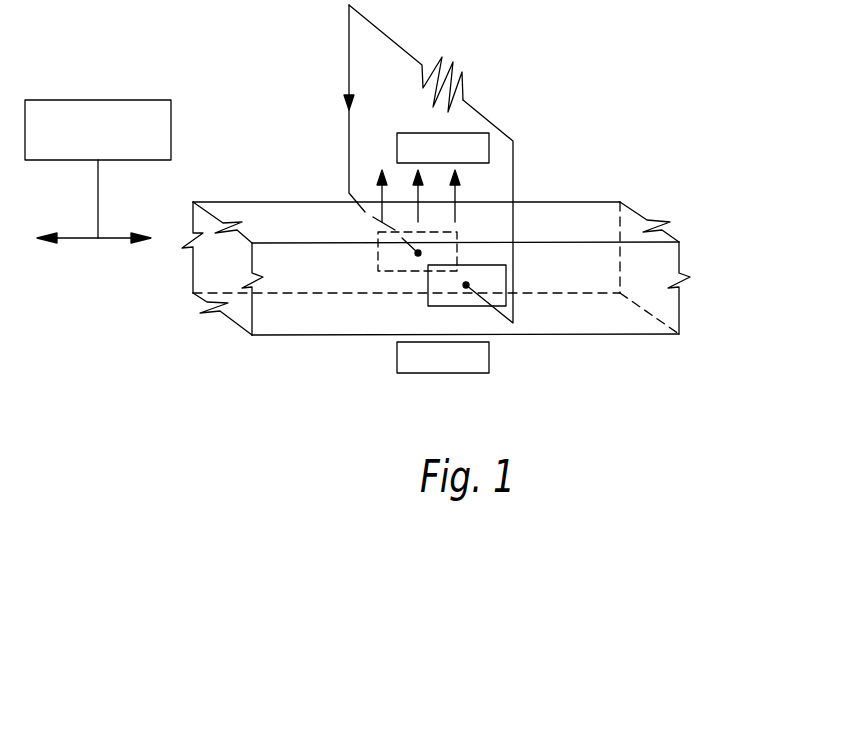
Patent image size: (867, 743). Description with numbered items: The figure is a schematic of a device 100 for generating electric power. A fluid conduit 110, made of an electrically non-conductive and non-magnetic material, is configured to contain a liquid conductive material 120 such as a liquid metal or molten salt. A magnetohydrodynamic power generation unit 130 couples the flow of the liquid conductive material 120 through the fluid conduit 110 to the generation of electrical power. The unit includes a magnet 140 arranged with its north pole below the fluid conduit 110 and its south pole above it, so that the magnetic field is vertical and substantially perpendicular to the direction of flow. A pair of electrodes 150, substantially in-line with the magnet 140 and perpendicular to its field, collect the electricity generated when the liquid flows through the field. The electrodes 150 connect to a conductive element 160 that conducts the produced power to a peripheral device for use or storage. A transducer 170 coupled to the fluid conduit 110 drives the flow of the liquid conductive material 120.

The device 100 is at (242, 45).
The fluid conduit 110 is at (602, 212).
The liquid conductive material 120 is at (668, 310).
The magnetohydrodynamic (MHD) power generation unit 130 is at (504, 110).
The magnet 140 is at (397, 355).
The pair of electrodes 150 is at (477, 306).
The conductive element 160 is at (378, 38).
The transducer 170 is at (115, 99).